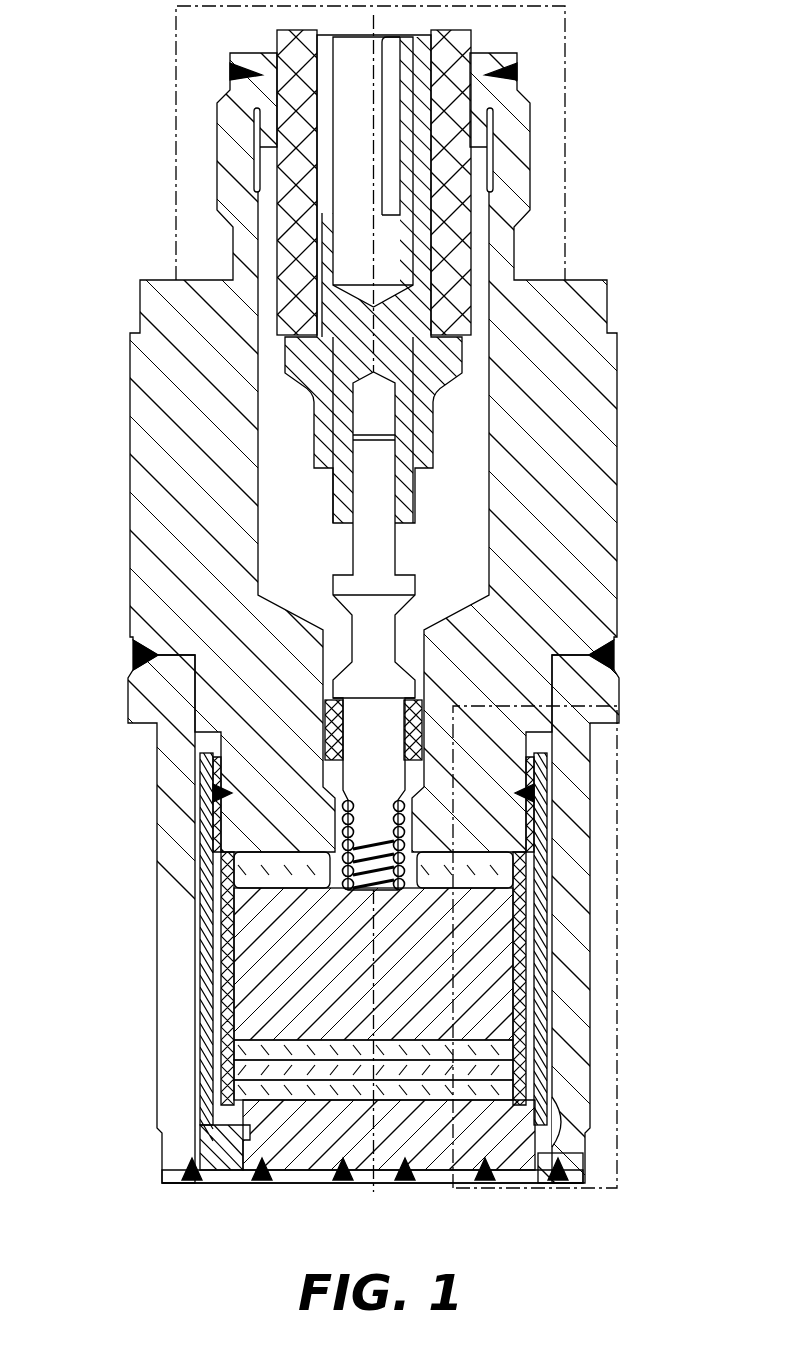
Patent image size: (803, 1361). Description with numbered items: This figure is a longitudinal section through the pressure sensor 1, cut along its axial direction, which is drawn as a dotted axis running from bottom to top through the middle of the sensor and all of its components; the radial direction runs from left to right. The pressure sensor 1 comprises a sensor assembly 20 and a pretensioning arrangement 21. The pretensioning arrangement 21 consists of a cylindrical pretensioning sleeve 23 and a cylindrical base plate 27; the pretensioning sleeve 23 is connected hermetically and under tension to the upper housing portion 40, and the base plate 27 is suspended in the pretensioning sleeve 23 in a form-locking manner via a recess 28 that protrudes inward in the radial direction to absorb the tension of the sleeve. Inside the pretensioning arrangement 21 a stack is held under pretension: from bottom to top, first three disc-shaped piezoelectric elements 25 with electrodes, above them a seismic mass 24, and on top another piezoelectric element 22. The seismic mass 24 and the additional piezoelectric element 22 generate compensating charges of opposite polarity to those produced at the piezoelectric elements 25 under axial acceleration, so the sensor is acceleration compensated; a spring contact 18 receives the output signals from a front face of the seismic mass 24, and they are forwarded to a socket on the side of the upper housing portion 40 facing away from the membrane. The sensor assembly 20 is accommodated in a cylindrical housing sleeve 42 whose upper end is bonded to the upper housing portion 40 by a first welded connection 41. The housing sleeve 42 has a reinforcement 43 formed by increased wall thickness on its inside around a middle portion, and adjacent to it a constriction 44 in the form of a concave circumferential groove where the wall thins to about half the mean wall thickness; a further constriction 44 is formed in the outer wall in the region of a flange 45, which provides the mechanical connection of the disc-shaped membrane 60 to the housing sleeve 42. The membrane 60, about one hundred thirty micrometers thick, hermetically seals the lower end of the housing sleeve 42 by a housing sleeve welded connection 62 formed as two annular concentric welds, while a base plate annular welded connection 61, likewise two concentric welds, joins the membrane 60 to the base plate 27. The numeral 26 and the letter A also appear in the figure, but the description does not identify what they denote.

The pressure sensor 1 is at (102, 58).
The spring contact 18 is at (348, 868).
The sensor assembly 20 is at (138, 939).
The pretensioning arrangement 21 is at (205, 853).
The additional piezoelectric element 22 is at (248, 867).
The pretensioning sleeve 23 is at (230, 972).
The seismic mass 24 is at (250, 1015).
The disc-shaped piezoelectric elements 25 is at (243, 1092).
The lower block 26 is at (232, 1133).
The base plate 27 is at (215, 1137).
The recess 28 is at (190, 1158).
The upper housing portion 40 is at (602, 487).
The first welded connection 41 is at (612, 658).
The housing sleeve 42 is at (567, 768).
The reinforcement 43 is at (562, 980).
The constriction 44 is at (582, 1147).
The flange 45 is at (540, 1153).
The membrane 60 is at (297, 1183).
The base plate annular welded connection 61 is at (392, 1183).
The housing sleeve welded connection 62 is at (548, 1183).
The detail region A is at (606, 1188).